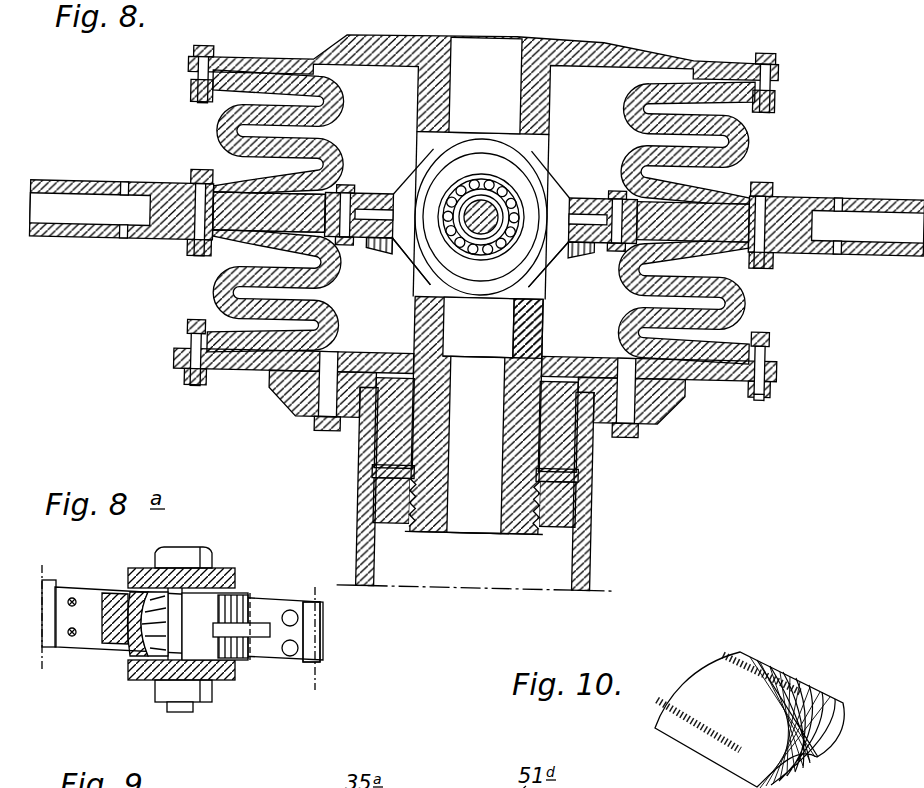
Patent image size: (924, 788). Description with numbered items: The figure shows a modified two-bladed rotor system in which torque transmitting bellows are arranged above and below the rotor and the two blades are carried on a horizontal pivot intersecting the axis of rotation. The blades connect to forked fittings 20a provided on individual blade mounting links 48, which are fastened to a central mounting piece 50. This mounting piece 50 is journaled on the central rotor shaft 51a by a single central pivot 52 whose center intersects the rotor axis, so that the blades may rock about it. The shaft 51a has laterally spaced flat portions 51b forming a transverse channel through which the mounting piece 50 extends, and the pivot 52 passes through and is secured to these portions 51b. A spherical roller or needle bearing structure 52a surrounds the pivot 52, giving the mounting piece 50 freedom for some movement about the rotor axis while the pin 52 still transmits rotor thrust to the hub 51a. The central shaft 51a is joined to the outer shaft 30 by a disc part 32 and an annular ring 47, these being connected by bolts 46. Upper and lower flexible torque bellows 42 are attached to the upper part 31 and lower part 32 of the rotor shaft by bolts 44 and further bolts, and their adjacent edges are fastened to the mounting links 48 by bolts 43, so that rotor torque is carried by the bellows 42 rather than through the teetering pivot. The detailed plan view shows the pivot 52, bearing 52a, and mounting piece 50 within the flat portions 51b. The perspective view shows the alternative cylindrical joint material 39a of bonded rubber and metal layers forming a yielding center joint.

In FIG. 8, the forked fittings 20a is at (186, 190).
In FIG. 8, the outer shaft 30 is at (588, 548).
In FIG. 8, the upper part of rotor shaft 31 is at (776, 72).
In FIG. 8, the disc part 32 is at (777, 353).
In FIG. 10, the joint material 39a is at (786, 670).
In FIG. 8, the flexible torque bellows 42 is at (742, 128).
In FIG. 8, the bolts 43 is at (190, 179).
In FIG. 8, the bolts 44 is at (190, 58).
In FIG. 8, the bolts 46 is at (322, 433).
In FIG. 8, the annular ring 47 is at (670, 409).
In FIG. 8, the blade mounting links 48 is at (238, 250).
In FIG. 8, the central mounting piece 50 is at (420, 232).
In FIG. 8A, the central mounting piece 50 is at (272, 652).
In FIG. 8, the rotor shaft 51a is at (531, 333).
In FIG. 8A, the rotor shaft 51a is at (222, 683).
In FIG. 8, the flat portions 51b is at (531, 286).
In FIG. 8A, the flat portions 51b is at (233, 594).
In FIG. 8, the central pivot 52 is at (481, 200).
In FIG. 8A, the central pivot 52 is at (210, 563).
In FIG. 8, the roller bearing structure 52a is at (487, 270).
In FIG. 8A, the roller bearing structure 52a is at (130, 652).